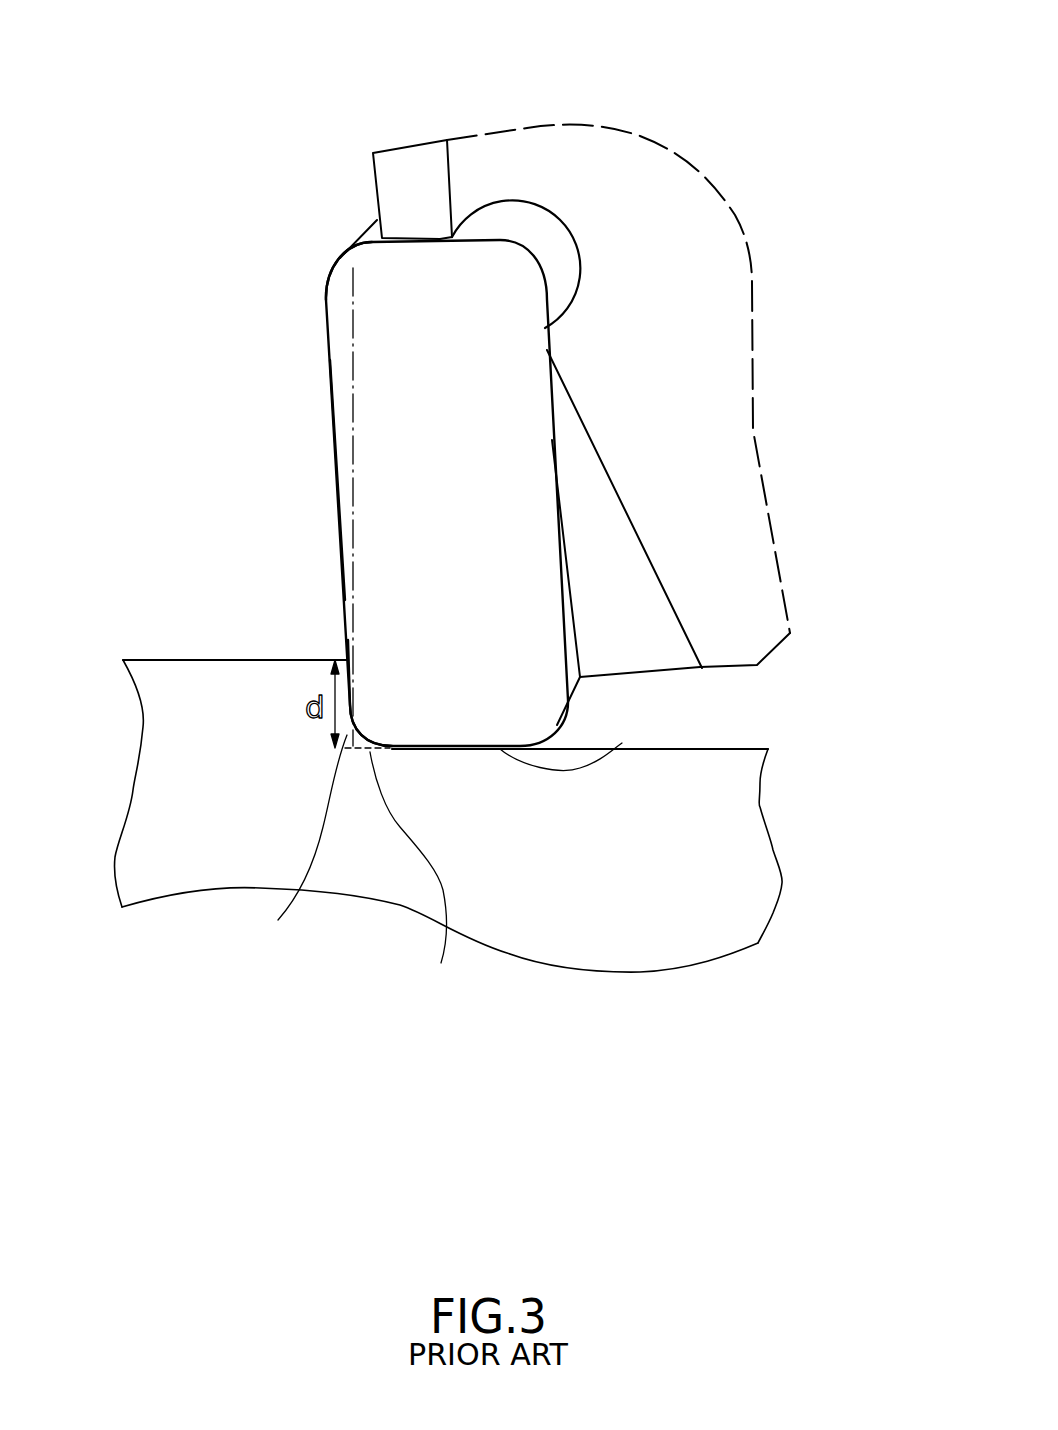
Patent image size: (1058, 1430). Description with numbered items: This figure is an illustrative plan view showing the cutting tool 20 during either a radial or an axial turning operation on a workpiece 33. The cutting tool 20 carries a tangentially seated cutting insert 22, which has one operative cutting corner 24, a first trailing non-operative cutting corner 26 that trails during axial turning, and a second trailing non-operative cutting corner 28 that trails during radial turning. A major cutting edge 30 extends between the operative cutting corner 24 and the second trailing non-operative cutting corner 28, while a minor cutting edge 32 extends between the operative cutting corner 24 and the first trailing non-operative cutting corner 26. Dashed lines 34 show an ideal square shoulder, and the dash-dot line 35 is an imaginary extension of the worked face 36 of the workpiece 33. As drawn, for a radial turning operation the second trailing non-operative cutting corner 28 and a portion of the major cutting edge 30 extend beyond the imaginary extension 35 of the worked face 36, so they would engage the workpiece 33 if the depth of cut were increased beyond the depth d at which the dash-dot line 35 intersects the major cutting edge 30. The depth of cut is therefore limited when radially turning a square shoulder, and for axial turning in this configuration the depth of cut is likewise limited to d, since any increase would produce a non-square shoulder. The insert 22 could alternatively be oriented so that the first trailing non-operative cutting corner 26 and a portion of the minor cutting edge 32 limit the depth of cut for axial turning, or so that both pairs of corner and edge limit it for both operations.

The cutting tool 20 is at (288, 102).
The cutting insert 22 is at (335, 448).
The operative cutting corner 24 is at (352, 740).
The first trailing non-operative cutting corner 26 is at (558, 733).
The second trailing non-operative cutting corner 28 is at (338, 263).
The major cutting edge 30 is at (342, 553).
The minor cutting edge 32 is at (622, 743).
The workpiece 33 is at (242, 692).
The dashed lines 34 is at (351, 869).
The dash-dot line 35 is at (353, 458).
The worked face 36 is at (353, 687).